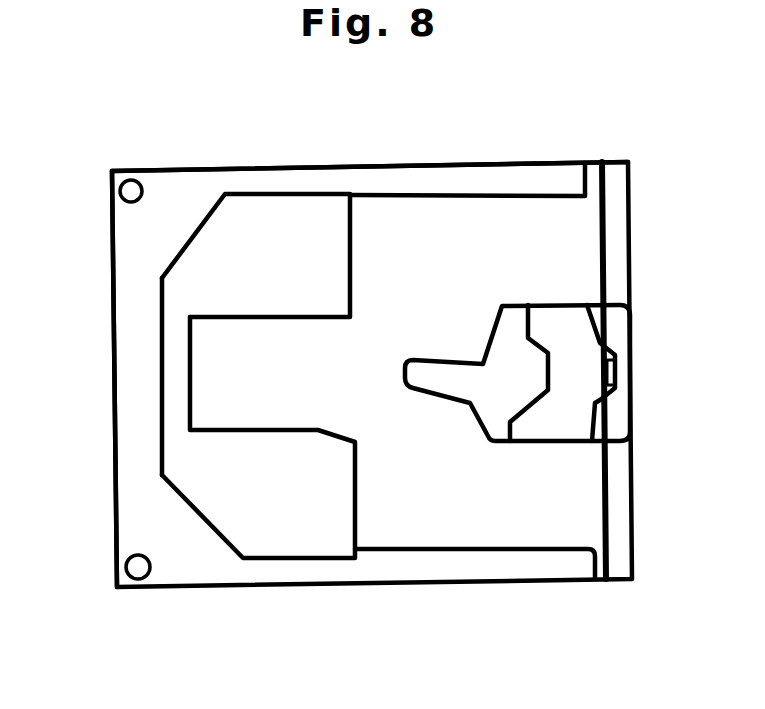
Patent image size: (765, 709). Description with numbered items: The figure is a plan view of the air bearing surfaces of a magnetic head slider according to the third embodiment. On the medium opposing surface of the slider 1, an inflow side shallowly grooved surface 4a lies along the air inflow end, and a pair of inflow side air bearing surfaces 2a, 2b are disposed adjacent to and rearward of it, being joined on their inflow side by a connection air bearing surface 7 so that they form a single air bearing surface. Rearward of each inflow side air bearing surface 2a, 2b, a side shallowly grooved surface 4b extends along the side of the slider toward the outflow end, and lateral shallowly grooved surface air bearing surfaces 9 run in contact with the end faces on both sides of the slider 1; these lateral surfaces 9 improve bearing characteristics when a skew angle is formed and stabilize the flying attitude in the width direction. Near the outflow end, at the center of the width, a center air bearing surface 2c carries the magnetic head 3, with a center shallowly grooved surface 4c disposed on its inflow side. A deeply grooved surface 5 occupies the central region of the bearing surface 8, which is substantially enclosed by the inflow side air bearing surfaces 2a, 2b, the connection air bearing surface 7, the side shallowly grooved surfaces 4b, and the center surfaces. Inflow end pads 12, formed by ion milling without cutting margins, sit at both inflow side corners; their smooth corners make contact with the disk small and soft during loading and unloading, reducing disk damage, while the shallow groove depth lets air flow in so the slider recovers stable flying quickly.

The slider 1 is at (117, 432).
The inflow side air bearing surface 2a is at (245, 273).
The inflow side air bearing surface 2b is at (248, 483).
The center air bearing surface 2c is at (582, 360).
The magnetic head 3 is at (617, 372).
The inflow side shallowly grooved surface 4a is at (130, 377).
The side shallowly grooved surface 4b is at (408, 185).
The center shallowly grooved surface 4c is at (508, 350).
The deeply grooved surface 5 is at (432, 305).
The connection air bearing surface 7 is at (173, 337).
The bearing surface 8 is at (217, 168).
The lateral shallowly grooved surface air bearing surface 9 is at (285, 183).
The inflow end pad 12 is at (131, 192).